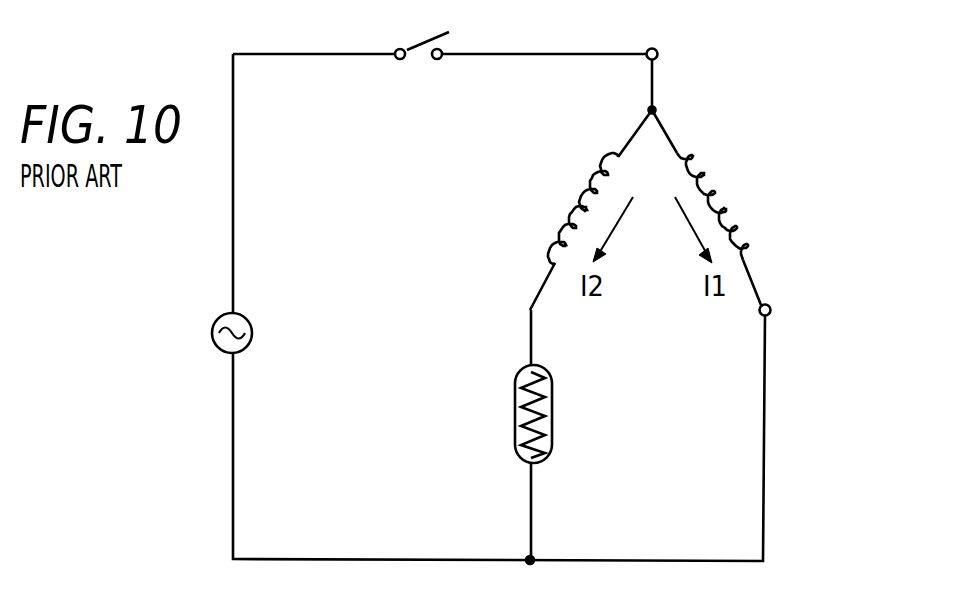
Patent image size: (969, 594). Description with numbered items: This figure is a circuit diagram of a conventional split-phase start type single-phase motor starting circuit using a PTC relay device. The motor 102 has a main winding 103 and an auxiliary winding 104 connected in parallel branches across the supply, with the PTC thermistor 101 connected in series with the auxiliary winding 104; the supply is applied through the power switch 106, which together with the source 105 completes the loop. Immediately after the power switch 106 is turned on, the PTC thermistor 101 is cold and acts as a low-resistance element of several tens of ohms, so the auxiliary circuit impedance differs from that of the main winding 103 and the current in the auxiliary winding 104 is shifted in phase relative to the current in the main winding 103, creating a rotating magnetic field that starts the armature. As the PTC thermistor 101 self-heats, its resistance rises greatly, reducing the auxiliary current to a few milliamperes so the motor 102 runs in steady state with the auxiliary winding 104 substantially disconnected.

The PTC thermistor 101 is at (552, 382).
The motor 102 is at (685, 140).
The main winding 103 is at (717, 197).
The auxiliary winding 104 is at (588, 190).
The AC power source 105 is at (253, 330).
The power switch 106 is at (418, 50).